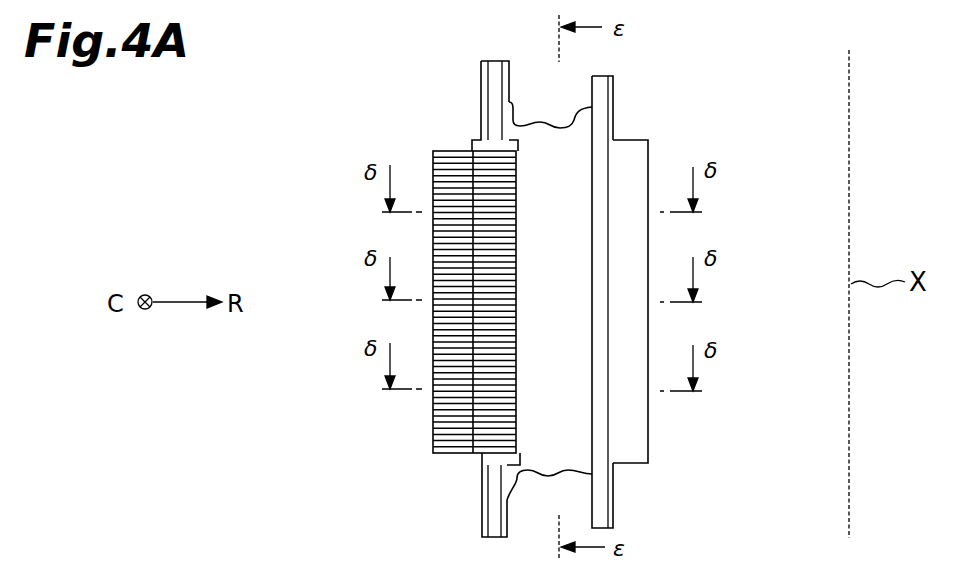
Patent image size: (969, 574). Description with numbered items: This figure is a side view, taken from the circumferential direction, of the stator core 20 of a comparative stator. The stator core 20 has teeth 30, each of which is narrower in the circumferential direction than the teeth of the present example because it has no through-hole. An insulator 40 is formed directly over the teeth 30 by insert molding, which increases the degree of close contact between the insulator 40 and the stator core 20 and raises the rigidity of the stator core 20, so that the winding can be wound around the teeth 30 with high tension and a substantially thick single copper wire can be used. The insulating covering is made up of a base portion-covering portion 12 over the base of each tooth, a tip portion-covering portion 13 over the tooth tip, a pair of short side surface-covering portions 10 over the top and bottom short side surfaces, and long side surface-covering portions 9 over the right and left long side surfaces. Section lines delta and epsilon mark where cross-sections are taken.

The comparative stator core 20 is at (481, 61).
The base portion-covering portion 12 is at (510, 180).
The short side surface-covering portions 10 is at (535, 138).
The insulator 40 is at (593, 76).
The teeth 30 is at (648, 140).
The long side surface-covering portions 9 is at (567, 250).
The tip portion-covering portion 13 is at (605, 447).